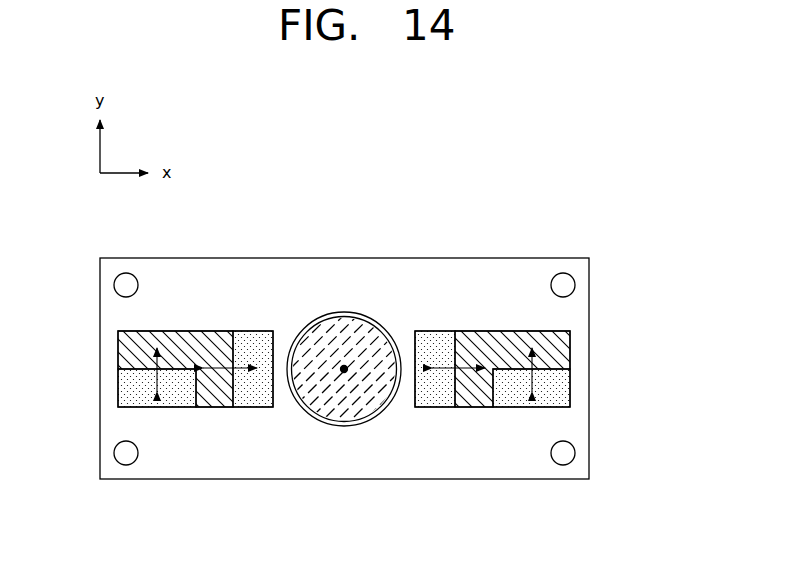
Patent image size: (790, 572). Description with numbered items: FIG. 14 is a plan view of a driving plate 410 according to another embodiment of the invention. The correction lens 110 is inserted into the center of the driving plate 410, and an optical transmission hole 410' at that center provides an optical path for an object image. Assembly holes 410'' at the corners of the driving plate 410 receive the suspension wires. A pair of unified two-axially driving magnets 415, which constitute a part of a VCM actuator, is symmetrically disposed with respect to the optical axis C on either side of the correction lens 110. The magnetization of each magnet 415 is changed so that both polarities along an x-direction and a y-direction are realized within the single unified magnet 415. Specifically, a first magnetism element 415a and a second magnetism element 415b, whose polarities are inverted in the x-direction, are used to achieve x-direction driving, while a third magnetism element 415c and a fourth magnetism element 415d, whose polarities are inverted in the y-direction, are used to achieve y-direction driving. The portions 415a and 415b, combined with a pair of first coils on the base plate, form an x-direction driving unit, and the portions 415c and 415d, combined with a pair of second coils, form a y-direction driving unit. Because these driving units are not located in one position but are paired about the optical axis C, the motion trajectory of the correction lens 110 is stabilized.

The driving plate 410 is at (344, 343).
The optical transmission hole 410' is at (344, 317).
The assembly hole 410'' is at (392, 370).
The correction lens 110 is at (367, 342).
The optical axis C is at (344, 372).
The unified 2-axially driving magnet 415 is at (345, 441).
The first magnetism element 415a is at (257, 397).
The second magnetism element 415b is at (218, 395).
The third magnetism element 415c is at (122, 350).
The fourth magnetism element 415d is at (122, 388).